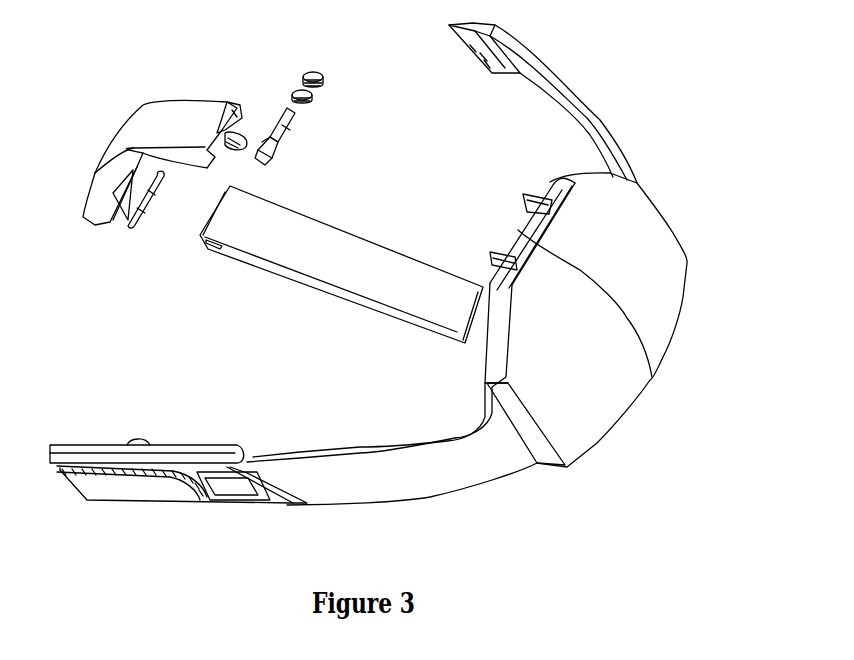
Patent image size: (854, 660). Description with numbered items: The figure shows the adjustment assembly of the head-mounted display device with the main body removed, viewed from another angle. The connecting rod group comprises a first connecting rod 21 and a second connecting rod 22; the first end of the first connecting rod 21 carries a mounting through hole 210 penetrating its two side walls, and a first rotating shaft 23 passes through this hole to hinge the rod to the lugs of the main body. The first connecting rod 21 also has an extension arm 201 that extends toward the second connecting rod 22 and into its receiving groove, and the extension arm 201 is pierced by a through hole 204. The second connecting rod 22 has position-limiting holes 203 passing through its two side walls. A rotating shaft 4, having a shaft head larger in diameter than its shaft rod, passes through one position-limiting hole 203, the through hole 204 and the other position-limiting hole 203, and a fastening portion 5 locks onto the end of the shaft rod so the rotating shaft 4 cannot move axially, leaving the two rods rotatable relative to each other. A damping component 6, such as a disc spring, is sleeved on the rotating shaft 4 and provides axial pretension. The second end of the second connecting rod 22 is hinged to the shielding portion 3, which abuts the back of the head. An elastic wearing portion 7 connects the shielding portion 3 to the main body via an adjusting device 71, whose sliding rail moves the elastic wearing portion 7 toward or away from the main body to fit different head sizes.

The shielding portion 3 is at (660, 330).
The elastic wearing portion 7 is at (347, 497).
The adjusting device 71 is at (133, 498).
The second connecting rod 22 is at (367, 235).
The position-limiting hole 203 is at (213, 250).
The first connecting rod 21 is at (133, 125).
The mounting through hole 210 is at (90, 217).
The first rotating shaft 23 is at (133, 230).
The extension arm 201 is at (233, 100).
The through hole 204 is at (233, 130).
The fastening portion 5 is at (320, 73).
The damping component 6 is at (317, 100).
The rotating shaft 4 is at (287, 142).